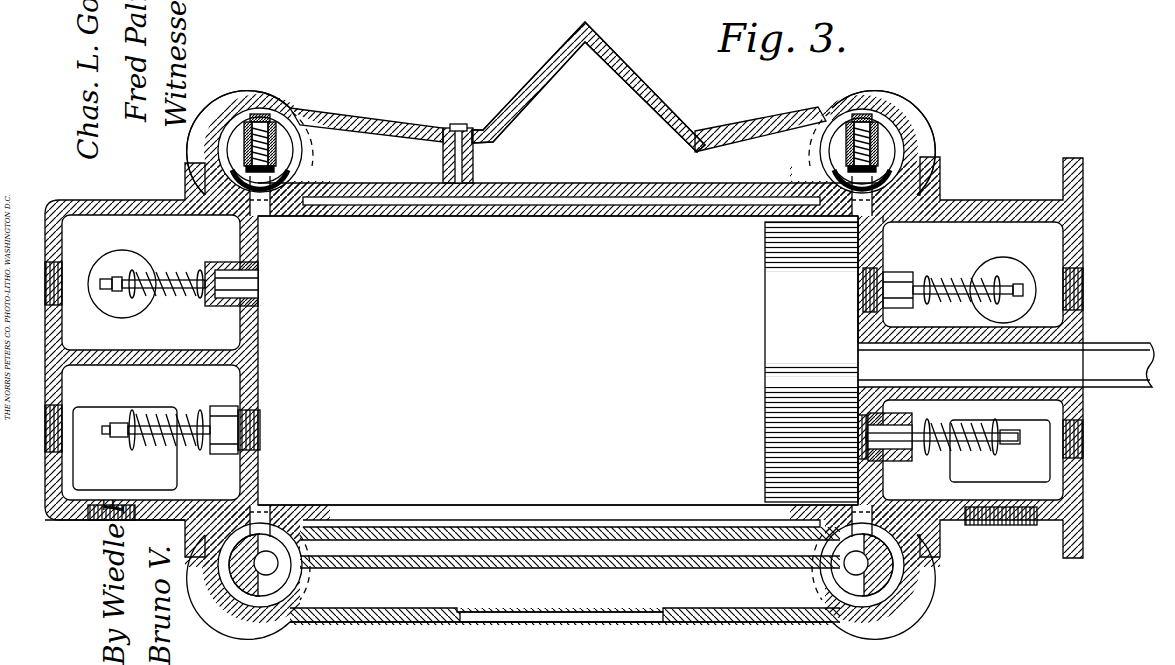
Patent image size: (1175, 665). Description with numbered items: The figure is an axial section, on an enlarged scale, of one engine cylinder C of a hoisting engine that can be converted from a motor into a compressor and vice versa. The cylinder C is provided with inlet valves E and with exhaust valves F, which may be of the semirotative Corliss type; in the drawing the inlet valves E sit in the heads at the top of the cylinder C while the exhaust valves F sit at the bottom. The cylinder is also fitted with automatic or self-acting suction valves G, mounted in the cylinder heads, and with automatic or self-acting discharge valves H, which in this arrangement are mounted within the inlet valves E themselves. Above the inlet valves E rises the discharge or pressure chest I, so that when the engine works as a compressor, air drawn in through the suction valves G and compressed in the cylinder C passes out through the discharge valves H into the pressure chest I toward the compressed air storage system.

The discharge valve H is at (240, 168).
The inlet valve E is at (282, 164).
The discharge or pressure chest I is at (588, 87).
The cylinder C is at (558, 360).
The suction valve G is at (562, 355).
The exhaust valve F is at (292, 578).